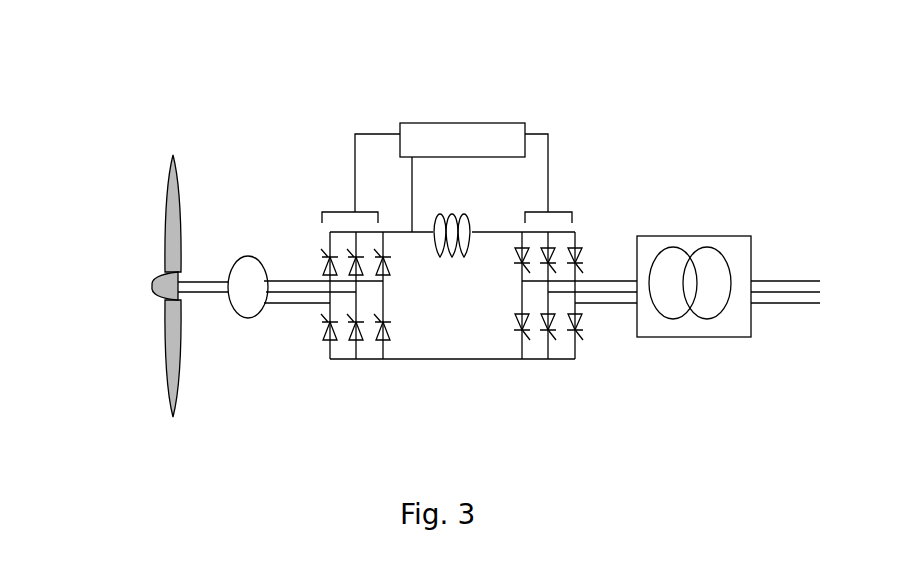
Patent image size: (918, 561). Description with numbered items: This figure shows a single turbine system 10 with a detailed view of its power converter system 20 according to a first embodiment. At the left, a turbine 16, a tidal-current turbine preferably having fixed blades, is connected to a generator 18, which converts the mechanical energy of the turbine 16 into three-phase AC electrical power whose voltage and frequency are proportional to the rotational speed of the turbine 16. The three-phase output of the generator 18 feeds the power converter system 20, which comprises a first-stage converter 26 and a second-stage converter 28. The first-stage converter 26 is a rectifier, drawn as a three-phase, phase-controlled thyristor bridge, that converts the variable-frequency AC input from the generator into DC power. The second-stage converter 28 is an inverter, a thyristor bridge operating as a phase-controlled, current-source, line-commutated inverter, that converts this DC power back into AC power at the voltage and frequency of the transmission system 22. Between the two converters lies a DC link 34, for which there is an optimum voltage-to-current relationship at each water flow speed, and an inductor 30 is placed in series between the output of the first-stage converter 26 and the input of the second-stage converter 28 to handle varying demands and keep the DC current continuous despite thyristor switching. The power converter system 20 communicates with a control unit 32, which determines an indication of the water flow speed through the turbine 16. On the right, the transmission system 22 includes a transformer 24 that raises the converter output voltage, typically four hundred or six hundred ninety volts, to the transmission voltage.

The turbine system 10 is at (134, 186).
The turbine 16 is at (177, 167).
The generator 18 is at (253, 257).
The power converter system 20 is at (448, 310).
The transmission system 22 is at (694, 252).
The transformer 24 is at (672, 247).
The first-stage converter 26 is at (343, 364).
The second-stage converter 28 is at (557, 364).
The inductor 30 is at (470, 213).
The control unit 32 is at (470, 122).
The DC link 34 is at (404, 222).